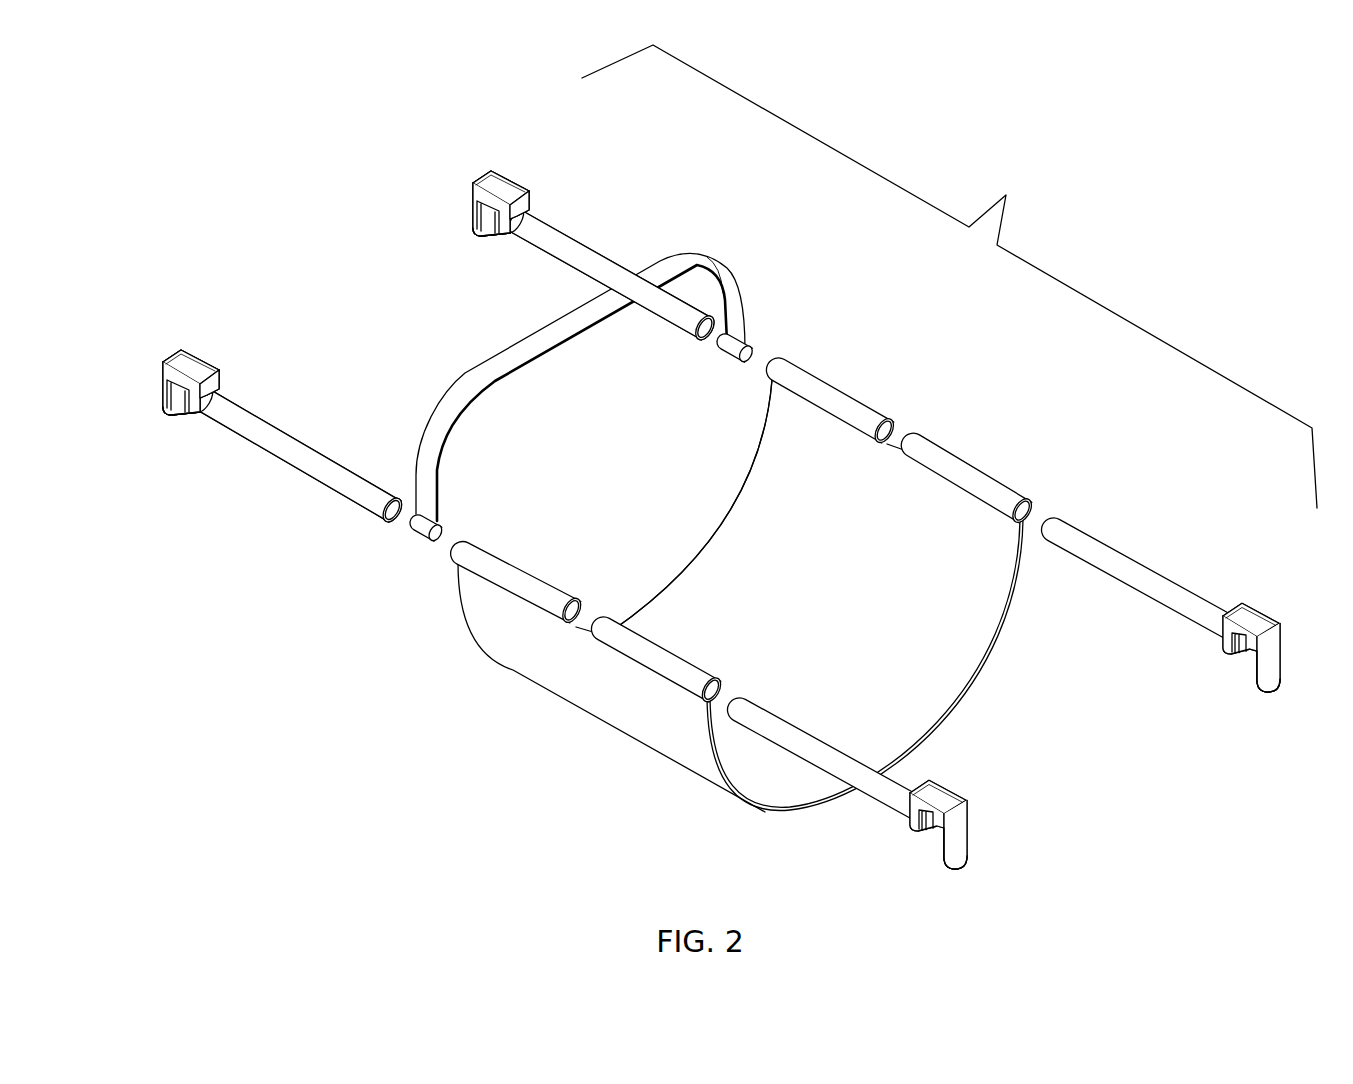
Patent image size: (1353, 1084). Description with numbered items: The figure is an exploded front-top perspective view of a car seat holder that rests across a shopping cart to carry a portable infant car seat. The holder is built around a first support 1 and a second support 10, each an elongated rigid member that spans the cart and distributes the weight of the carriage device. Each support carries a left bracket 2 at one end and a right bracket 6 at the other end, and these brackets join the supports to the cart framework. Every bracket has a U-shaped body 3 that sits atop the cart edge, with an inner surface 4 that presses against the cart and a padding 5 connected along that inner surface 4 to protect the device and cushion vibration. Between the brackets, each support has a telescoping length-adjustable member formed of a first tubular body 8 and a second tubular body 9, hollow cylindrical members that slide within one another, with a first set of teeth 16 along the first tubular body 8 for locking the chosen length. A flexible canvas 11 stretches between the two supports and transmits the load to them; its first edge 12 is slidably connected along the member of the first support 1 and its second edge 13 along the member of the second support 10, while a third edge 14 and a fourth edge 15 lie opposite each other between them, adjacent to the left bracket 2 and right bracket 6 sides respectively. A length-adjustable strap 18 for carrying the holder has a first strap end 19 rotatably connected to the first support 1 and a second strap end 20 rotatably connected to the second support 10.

The first support 1 is at (157, 286).
The left bracket 2 is at (215, 340).
The U-shaped body 3 is at (160, 370).
The inner surface 4 is at (170, 395).
The padding 5 is at (180, 412).
The right bracket 6 is at (1275, 594).
The first tubular body 8 is at (267, 433).
The second tubular body 9 is at (1170, 600).
The second support 10 is at (477, 96).
The canvas 11 is at (768, 660).
The first edge 12 is at (588, 602).
The second edge 13 is at (900, 437).
The third edge 14 is at (993, 643).
The fourth edge 15 is at (727, 513).
The first set of teeth 16 is at (384, 508).
The length-adjustable strap 18 is at (557, 333).
The first strap end 19 is at (417, 535).
The second strap end 20 is at (733, 355).